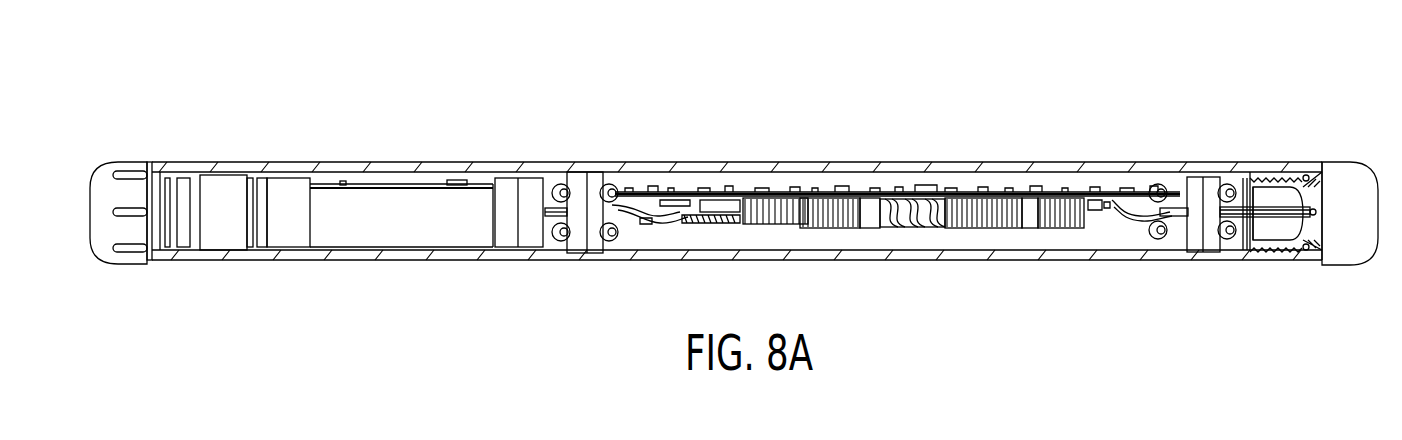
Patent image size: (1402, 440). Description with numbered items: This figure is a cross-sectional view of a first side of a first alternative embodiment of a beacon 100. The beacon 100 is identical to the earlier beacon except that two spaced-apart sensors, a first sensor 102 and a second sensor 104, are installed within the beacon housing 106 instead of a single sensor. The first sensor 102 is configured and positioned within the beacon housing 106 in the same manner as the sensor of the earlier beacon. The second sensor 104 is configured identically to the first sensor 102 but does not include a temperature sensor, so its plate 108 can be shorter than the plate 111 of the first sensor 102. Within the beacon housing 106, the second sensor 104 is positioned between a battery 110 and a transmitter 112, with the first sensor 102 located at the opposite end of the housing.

The beacon 100 is at (713, 97).
The first sensor 102 is at (1195, 182).
The second sensor 104 is at (596, 174).
The beacon housing 106 is at (787, 163).
The plate 108 is at (553, 177).
The battery 110 is at (388, 205).
The plate 111 is at (1268, 208).
The transmitter 112 is at (970, 200).